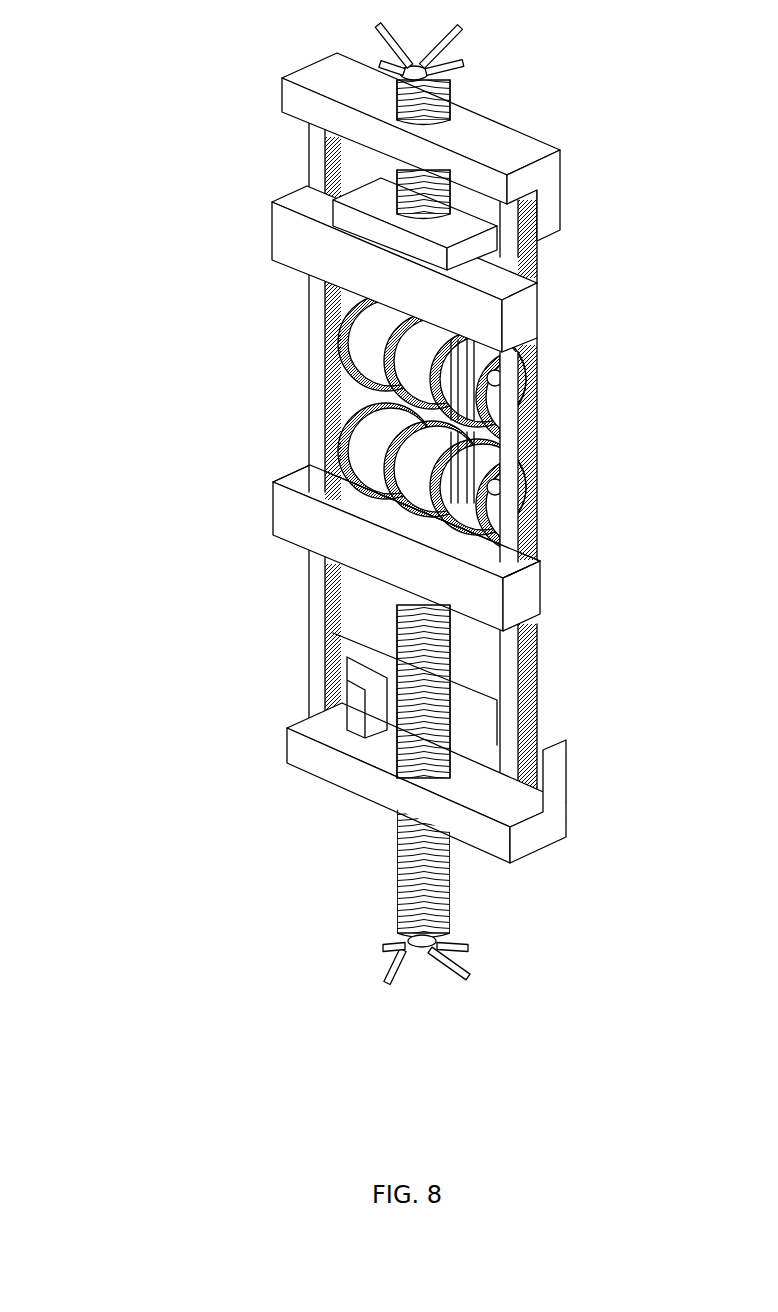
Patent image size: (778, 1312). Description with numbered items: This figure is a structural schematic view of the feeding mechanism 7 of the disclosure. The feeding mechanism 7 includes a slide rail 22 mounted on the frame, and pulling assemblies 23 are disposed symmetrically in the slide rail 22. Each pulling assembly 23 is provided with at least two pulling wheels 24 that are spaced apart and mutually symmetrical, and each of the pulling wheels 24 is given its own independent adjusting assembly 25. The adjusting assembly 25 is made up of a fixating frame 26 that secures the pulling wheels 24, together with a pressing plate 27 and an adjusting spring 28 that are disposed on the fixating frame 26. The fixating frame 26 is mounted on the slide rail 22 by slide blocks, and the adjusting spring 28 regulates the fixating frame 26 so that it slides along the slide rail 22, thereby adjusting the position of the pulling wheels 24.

The feeding mechanism 7 is at (557, 462).
The slide rail 22 is at (535, 677).
The pulling assembly 23 is at (294, 487).
The pulling wheel 24 is at (358, 430).
The adjusting assembly 25 is at (338, 725).
The fixating frame 26 is at (300, 507).
The pressing plate 27 is at (337, 571).
The adjusting spring 28 is at (343, 795).